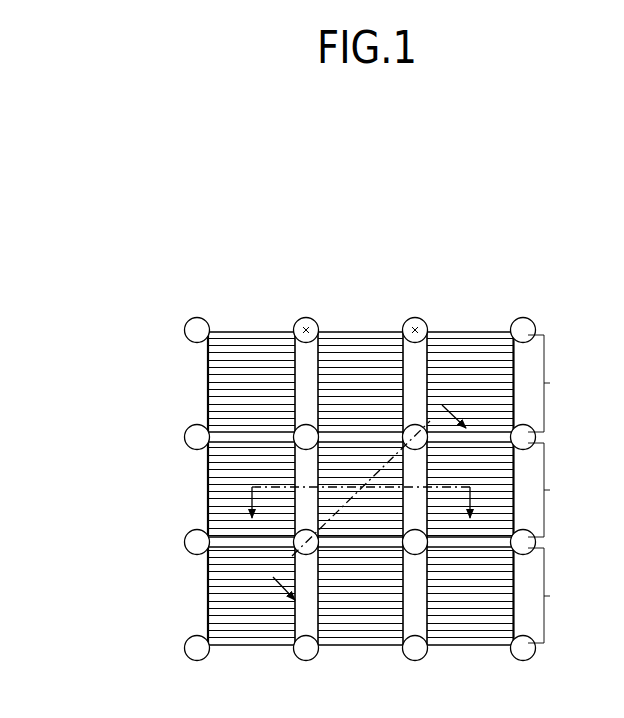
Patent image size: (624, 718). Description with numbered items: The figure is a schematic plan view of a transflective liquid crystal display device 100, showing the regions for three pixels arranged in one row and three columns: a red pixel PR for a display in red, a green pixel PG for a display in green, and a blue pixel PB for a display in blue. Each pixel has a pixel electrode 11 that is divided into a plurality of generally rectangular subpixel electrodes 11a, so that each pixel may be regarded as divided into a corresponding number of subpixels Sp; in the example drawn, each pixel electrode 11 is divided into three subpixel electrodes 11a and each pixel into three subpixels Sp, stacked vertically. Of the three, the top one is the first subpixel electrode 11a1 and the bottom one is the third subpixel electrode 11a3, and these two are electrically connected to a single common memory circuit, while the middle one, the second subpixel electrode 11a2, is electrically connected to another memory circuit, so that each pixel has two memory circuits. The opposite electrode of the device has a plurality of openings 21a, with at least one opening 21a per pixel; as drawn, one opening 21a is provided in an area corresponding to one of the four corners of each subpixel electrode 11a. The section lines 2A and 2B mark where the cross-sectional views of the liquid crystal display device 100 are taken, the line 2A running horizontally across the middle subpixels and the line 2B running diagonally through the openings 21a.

The liquid crystal display device 100 is at (321, 453).
The pixel electrode 11 is at (270, 488).
The subpixel electrode 11a is at (294, 488).
The first subpixel electrode 11a1 is at (243, 383).
The second subpixel electrode 11a2 is at (217, 507).
The third subpixel electrode 11a3 is at (294, 594).
The opening 21a is at (306, 320).
The red pixel PR is at (246, 331).
The green pixel PG is at (354, 331).
The blue pixel PB is at (462, 331).
The subpixel Sp is at (551, 489).
The line 2A-2A' 2A is at (363, 498).
The line 2B-2B' 2B is at (370, 505).